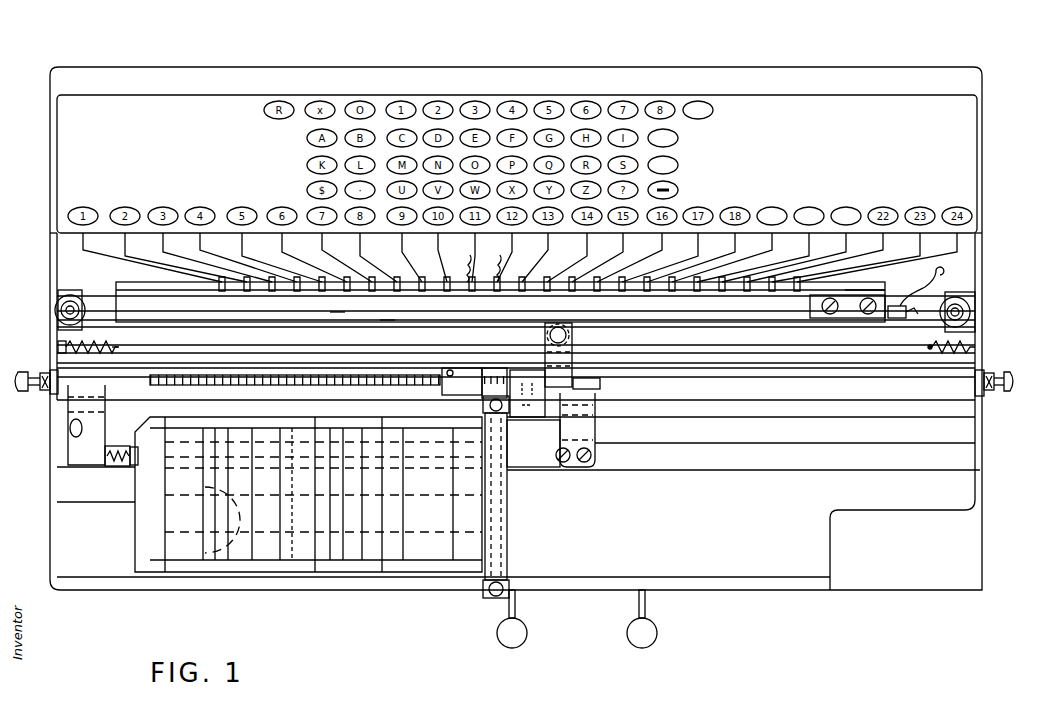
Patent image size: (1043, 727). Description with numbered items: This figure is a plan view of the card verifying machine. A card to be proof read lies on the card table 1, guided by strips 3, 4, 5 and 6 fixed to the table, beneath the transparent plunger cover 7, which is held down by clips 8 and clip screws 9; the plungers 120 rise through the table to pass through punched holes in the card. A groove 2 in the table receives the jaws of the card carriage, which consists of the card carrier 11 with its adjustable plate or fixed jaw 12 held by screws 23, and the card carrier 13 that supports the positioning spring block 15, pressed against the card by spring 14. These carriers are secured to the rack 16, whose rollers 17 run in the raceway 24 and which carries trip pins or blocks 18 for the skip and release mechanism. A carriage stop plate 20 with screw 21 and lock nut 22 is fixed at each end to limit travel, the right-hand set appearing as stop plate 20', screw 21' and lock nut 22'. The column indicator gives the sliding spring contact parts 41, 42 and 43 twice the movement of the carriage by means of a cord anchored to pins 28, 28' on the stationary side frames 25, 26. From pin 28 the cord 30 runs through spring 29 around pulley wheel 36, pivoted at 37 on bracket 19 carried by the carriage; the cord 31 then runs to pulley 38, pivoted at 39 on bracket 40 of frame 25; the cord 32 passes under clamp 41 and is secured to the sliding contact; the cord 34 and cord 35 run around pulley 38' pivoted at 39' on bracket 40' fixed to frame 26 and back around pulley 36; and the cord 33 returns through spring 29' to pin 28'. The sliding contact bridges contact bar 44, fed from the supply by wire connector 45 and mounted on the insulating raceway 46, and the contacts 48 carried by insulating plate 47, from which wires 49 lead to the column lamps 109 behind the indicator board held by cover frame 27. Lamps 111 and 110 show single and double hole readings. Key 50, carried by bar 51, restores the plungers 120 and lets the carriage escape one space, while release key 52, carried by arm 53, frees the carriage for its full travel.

The card table 1 is at (95, 497).
The groove 2 is at (743, 444).
The guide strip 3 is at (770, 588).
The guide strip 4 is at (345, 580).
The guide strip 5 is at (753, 414).
The guide strip 6 is at (259, 408).
The plunger cover 7 is at (487, 540).
The clips 8 is at (482, 405).
The clip screws 9 is at (490, 600).
The card carrier 11 is at (588, 432).
The adjustable plate 12 is at (527, 462).
The card carrier 13 is at (70, 430).
The spring 14 is at (110, 467).
The positioning spring block 15 is at (143, 458).
The rack 16 is at (600, 386).
The rollers 17 is at (100, 366).
The trip pins or blocks 18 is at (524, 400).
The bracket 19 is at (555, 363).
The carriage stop plate 20 is at (33, 370).
The screw 21 is at (23, 392).
The lock nut 22 is at (39, 395).
The screws 23 is at (566, 463).
The raceway 24 is at (800, 368).
The side frame 25 is at (52, 249).
The side frame 26 is at (978, 249).
The cover frame 27 is at (93, 78).
The pin 28 is at (63, 339).
The spring 29 is at (105, 337).
The cord 30 is at (206, 346).
The cord 31 is at (272, 327).
The cord 32 is at (186, 310).
The cord 33 is at (782, 346).
The cord 34 is at (897, 318).
The cord 35 is at (908, 298).
The pulley wheel 36 is at (567, 326).
The pivot 37 is at (553, 328).
The pulley 38 is at (46, 310).
The pivot 39 is at (43, 298).
The bracket 40 is at (70, 300).
The clamp 41 is at (810, 305).
The sliding spring contact part 42 is at (833, 314).
The sliding spring contact part 43 is at (848, 292).
The contact bar 44 is at (333, 316).
The wire connector 45 is at (920, 318).
The rod 46 is at (388, 320).
The insulating plate 47 is at (440, 288).
The fixed contacts 48 is at (546, 278).
The wires 49 is at (250, 258).
The key 50 is at (497, 637).
The bar 51 is at (516, 607).
The release key 52 is at (655, 642).
The arm 53 is at (646, 604).
The lamps 109 is at (785, 208).
The lamp 110 is at (679, 139).
The lamp 111 is at (714, 110).
The plungers 120 is at (497, 542).
The end bracket right 20' is at (998, 412).
The adjusting screw right 21' is at (1008, 393).
The lock nut right 22' is at (1002, 403).
The pin 28' is at (972, 355).
The spring 29' is at (968, 340).
The pulley 38' is at (976, 309).
The pivot 39' is at (980, 316).
The bracket 40' is at (979, 301).